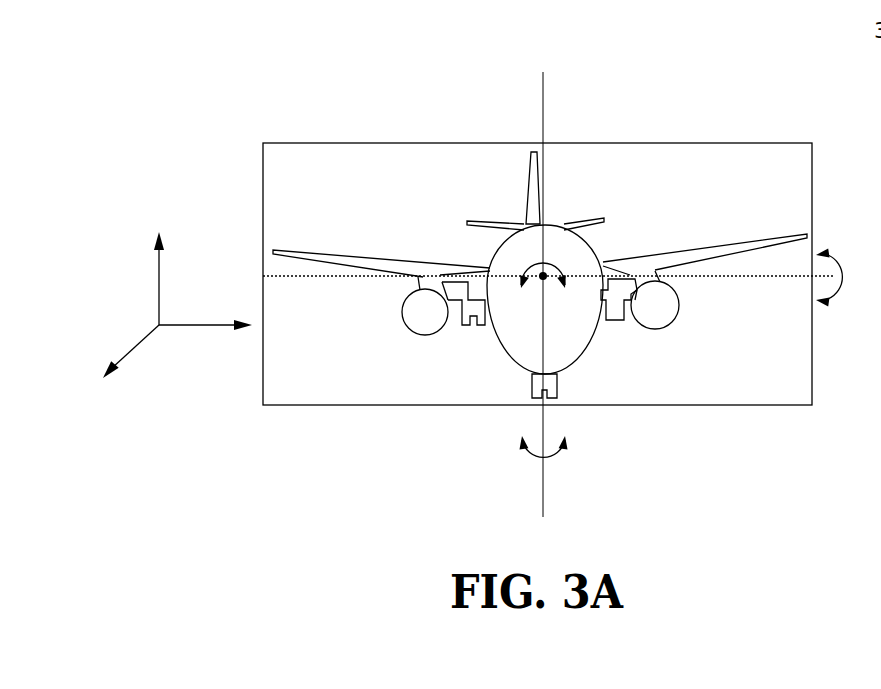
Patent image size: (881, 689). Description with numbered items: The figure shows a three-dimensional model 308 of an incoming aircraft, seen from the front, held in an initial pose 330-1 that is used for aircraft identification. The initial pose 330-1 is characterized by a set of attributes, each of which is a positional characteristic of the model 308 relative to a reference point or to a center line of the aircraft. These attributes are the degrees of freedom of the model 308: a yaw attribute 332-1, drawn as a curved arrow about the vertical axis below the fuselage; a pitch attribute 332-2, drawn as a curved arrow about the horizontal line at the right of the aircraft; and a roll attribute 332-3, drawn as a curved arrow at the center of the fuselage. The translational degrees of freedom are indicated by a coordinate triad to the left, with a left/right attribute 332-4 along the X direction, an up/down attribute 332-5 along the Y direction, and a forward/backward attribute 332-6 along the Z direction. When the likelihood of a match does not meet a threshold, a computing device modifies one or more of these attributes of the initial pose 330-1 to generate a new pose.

The initial pose 330-1 is at (310, 78).
The three-dimensional (3D) model 308 is at (530, 168).
The yaw attribute 332-1 is at (537, 468).
The pitch attribute 332-2 is at (833, 302).
The roll attribute 332-3 is at (487, 294).
The left/right attribute 332-4 is at (243, 364).
The up/down attribute 332-5 is at (142, 232).
The forward/backward attribute 332-6 is at (112, 407).